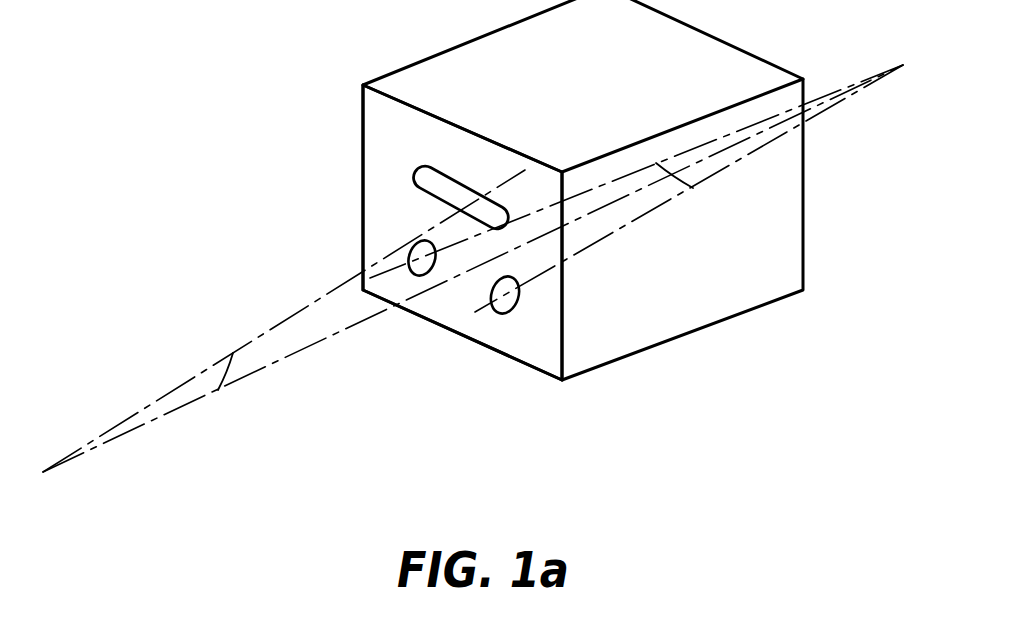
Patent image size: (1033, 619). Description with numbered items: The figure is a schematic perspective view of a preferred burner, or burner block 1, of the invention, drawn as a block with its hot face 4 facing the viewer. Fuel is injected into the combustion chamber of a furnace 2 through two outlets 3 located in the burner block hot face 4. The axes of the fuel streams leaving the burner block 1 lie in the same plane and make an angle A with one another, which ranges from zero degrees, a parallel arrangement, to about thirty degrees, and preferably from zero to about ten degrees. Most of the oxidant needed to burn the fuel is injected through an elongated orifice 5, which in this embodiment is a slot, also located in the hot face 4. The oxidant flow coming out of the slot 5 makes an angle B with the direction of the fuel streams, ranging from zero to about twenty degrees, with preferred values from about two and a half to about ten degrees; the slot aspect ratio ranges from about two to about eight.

The burner block 1 is at (607, 74).
The furnace 2 is at (473, 268).
The outlets 3 is at (500, 314).
The burner block hot face 4 is at (387, 222).
The elongated orifice 5 is at (407, 173).
The angle A is at (684, 189).
The angle B is at (222, 393).